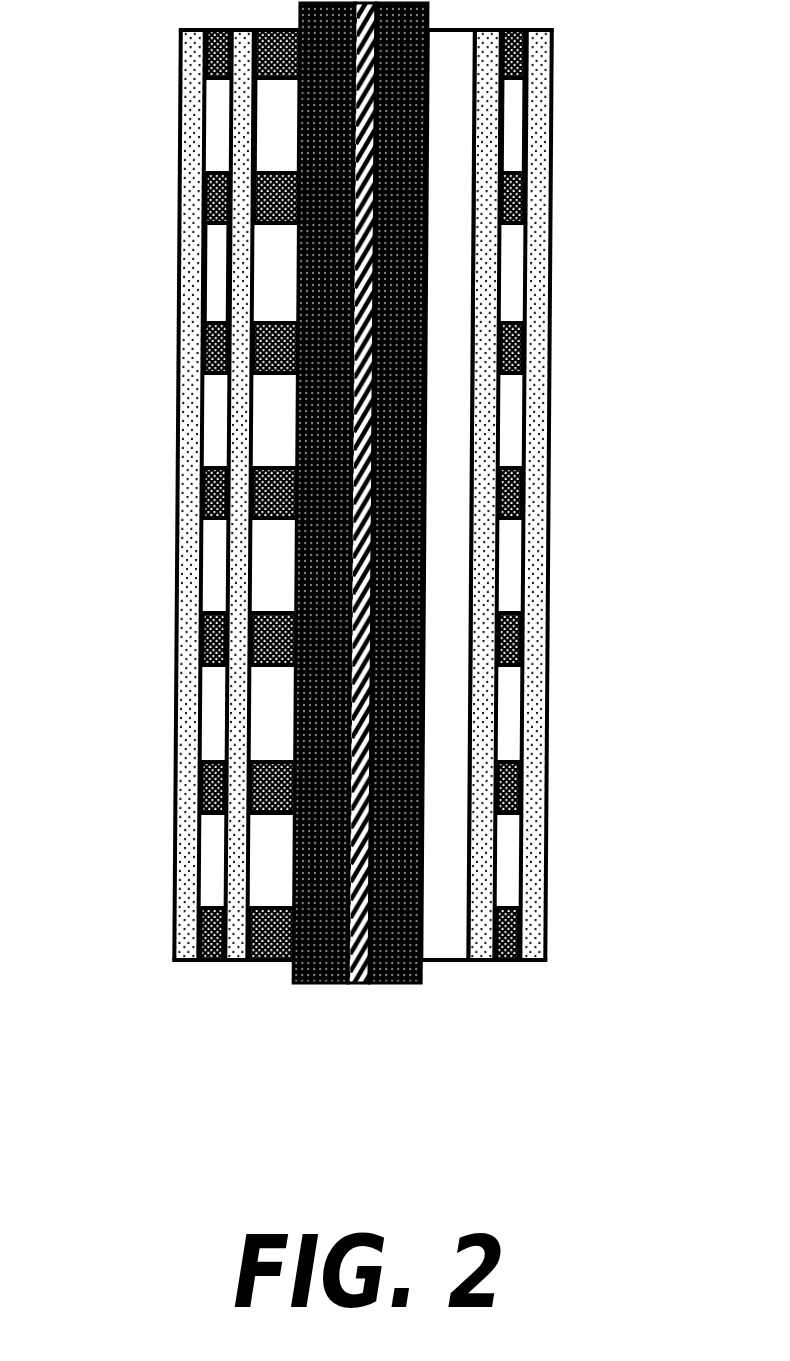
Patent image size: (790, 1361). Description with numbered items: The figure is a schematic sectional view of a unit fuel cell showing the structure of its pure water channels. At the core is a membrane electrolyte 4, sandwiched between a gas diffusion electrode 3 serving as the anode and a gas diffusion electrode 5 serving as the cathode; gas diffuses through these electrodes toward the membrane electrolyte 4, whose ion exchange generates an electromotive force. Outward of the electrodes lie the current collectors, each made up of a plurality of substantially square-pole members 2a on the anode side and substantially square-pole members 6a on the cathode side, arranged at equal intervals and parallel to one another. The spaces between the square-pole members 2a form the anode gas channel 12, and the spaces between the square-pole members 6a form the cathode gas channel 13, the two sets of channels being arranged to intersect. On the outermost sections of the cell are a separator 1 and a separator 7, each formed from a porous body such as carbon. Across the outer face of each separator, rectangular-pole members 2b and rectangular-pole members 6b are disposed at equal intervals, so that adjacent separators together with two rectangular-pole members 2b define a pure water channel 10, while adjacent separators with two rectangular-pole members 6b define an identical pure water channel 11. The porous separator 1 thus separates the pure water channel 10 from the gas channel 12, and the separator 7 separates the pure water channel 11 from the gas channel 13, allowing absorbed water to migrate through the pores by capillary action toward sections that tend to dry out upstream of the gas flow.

The separator 1 is at (195, 598).
The substantially square-pole member 2a is at (443, 962).
The rectangular-pole member 2b is at (518, 910).
The gas diffusion electrode 3 is at (425, 393).
The membrane electrolyte 4 is at (357, 512).
The gas diffusion electrode 5 is at (280, 658).
The substantially square-pole member 6a is at (225, 352).
The rectangular-pole member 6b is at (207, 914).
The separator 7 is at (240, 458).
The pure water channel 10 is at (510, 138).
The pure water channel 11 is at (218, 273).
The gas channel 12 is at (448, 305).
The gas channel 13 is at (277, 127).